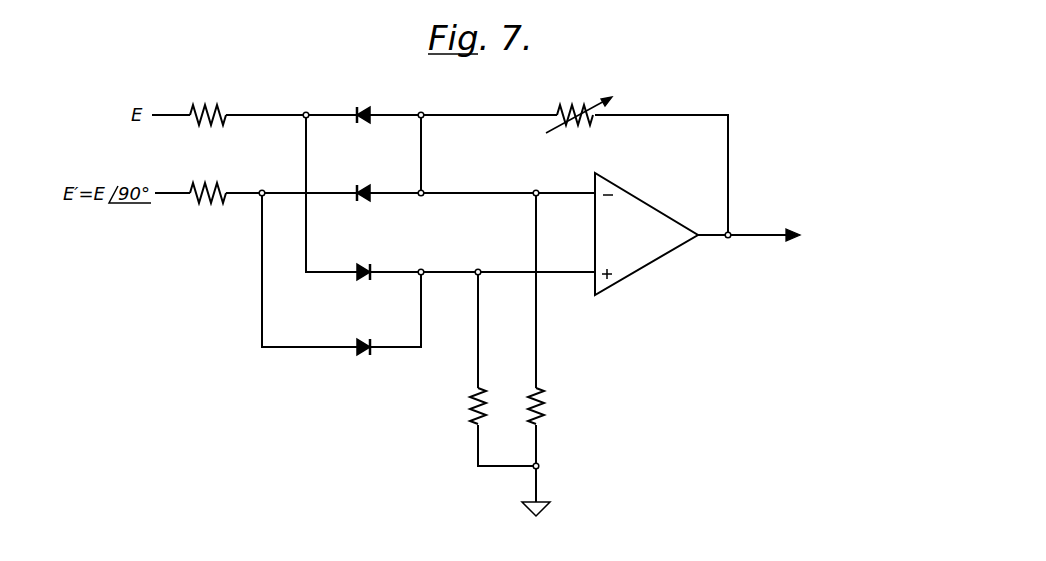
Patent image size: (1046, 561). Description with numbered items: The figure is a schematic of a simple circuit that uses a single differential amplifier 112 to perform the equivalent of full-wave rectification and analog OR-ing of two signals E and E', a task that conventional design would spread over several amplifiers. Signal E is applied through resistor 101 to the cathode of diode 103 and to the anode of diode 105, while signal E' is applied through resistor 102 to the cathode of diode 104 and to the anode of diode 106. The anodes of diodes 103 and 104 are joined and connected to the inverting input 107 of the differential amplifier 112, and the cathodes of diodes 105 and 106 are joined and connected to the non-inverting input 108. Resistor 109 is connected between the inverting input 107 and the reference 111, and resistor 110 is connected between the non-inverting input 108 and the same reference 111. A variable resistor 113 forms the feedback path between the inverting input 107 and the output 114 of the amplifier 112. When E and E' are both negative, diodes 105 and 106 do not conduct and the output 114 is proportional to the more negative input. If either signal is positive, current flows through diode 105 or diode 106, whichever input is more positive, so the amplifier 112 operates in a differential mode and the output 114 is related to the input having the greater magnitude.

The resistor 101 is at (224, 111).
The resistor 102 is at (207, 202).
The diode 103 is at (362, 107).
The diode 104 is at (362, 185).
The diode 105 is at (369, 265).
The diode 106 is at (369, 341).
The inverting input 107 is at (593, 192).
The non-inverting input 108 is at (584, 278).
The resistor 109 is at (545, 418).
The resistor 110 is at (470, 418).
The reference 111 is at (548, 507).
The differential amplifier 112 is at (648, 266).
The variable resistor 113 is at (563, 110).
The output 114 is at (768, 238).